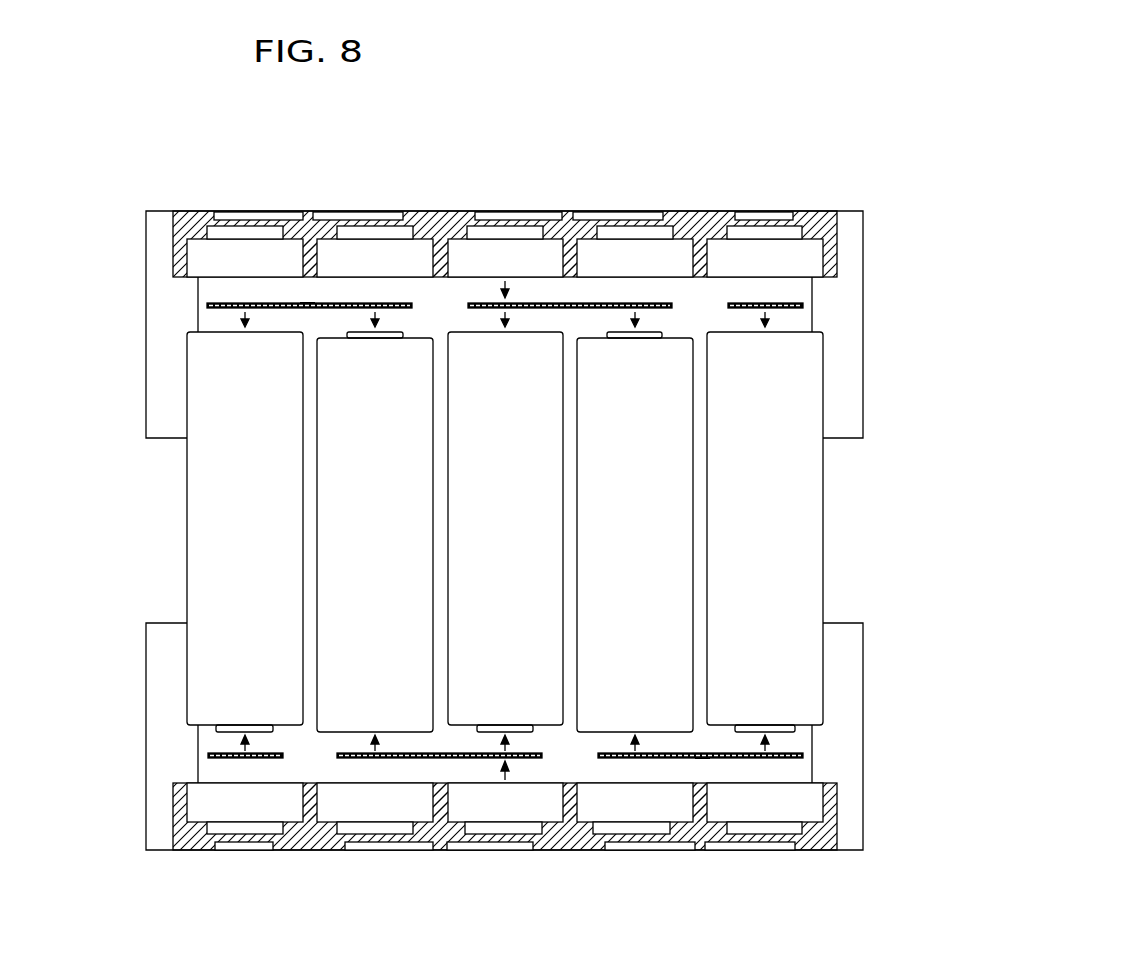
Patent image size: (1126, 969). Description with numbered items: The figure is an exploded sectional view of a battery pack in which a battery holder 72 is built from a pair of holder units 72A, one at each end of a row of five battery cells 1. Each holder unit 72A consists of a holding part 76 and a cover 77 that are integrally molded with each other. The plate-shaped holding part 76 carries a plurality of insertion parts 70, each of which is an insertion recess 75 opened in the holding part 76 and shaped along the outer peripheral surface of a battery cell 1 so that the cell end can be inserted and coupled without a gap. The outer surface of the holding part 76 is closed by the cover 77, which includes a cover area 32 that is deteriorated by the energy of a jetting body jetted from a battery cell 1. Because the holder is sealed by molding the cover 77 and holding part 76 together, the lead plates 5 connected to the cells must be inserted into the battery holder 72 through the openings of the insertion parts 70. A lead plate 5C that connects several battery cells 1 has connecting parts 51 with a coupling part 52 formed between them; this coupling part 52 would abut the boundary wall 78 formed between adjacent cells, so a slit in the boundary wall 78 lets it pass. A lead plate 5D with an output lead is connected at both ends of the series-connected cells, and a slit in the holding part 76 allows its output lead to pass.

The battery cell 1 is at (212, 517).
The lead plate 5 is at (503, 526).
The lead plate 5C is at (383, 290).
The lead plate 5D is at (738, 290).
The cover area 32 is at (243, 221).
The connecting part 51 is at (273, 302).
The coupling part 52 is at (307, 303).
The insertion part 70 is at (526, 530).
The battery holder 72 is at (623, 529).
The holder unit 72A is at (605, 529).
The insertion recess 75 is at (446, 530).
The holding part 76 is at (843, 248).
The cover 77 is at (790, 200).
The boundary wall 78 is at (313, 262).